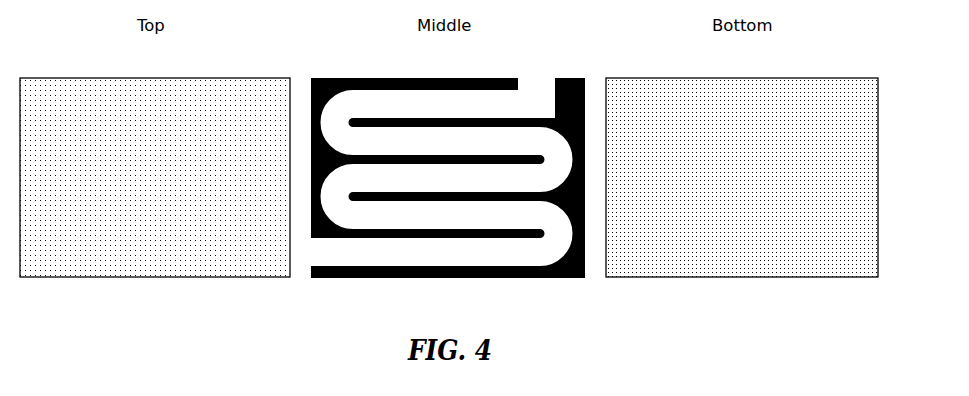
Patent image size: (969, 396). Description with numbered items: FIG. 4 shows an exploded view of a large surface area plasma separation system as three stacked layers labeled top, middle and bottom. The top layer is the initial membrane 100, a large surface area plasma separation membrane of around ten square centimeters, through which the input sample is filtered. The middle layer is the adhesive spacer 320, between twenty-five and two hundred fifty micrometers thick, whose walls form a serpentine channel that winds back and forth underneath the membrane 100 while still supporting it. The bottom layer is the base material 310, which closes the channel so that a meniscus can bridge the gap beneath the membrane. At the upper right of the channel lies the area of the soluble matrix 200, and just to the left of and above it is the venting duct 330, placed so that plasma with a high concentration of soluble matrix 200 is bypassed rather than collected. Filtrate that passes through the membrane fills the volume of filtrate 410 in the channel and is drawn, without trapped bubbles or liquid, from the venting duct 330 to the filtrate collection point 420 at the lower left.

The initial membrane 100 is at (117, 85).
The soluble matrix 200 is at (559, 80).
The base material 310 is at (798, 90).
The adhesive spacer 320 is at (563, 279).
The venting duct 330 is at (533, 83).
The volume of filtrate 410 is at (448, 178).
The filtrate collection point 420 is at (312, 255).